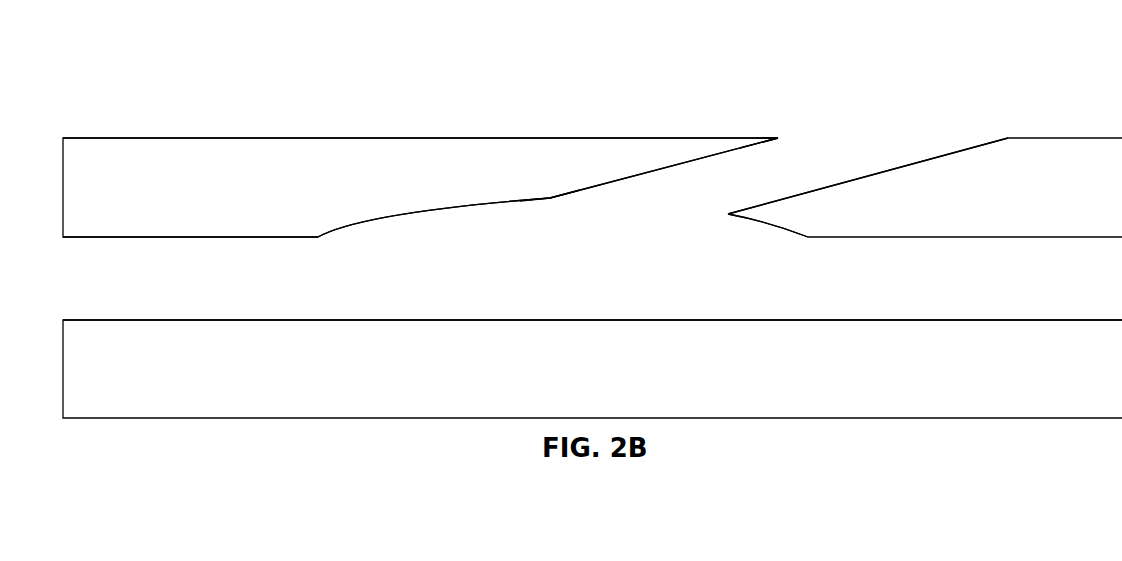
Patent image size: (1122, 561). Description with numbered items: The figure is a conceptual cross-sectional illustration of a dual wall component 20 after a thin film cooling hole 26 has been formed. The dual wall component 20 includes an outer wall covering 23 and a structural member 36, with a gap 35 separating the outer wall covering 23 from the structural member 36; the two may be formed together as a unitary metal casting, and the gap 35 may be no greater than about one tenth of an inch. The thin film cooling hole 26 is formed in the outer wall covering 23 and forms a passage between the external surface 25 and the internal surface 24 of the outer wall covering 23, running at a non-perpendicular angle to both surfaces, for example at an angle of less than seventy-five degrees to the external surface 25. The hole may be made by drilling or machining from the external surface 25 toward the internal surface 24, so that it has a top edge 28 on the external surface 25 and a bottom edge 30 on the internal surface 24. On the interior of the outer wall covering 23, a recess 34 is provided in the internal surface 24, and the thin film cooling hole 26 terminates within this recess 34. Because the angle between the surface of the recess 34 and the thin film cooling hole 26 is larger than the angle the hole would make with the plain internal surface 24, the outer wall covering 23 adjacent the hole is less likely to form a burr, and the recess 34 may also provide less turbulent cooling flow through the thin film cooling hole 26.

The dual wall component 20 is at (128, 96).
The outer wall covering 23 is at (568, 187).
The internal surface 24 is at (884, 242).
The external surface 25 is at (427, 130).
The thin film cooling hole 26 is at (779, 176).
The top edge 28 is at (778, 136).
The bottom edge 30 is at (551, 199).
The recess 34 is at (463, 205).
The gap 35 is at (592, 278).
The structural member 36 is at (592, 369).